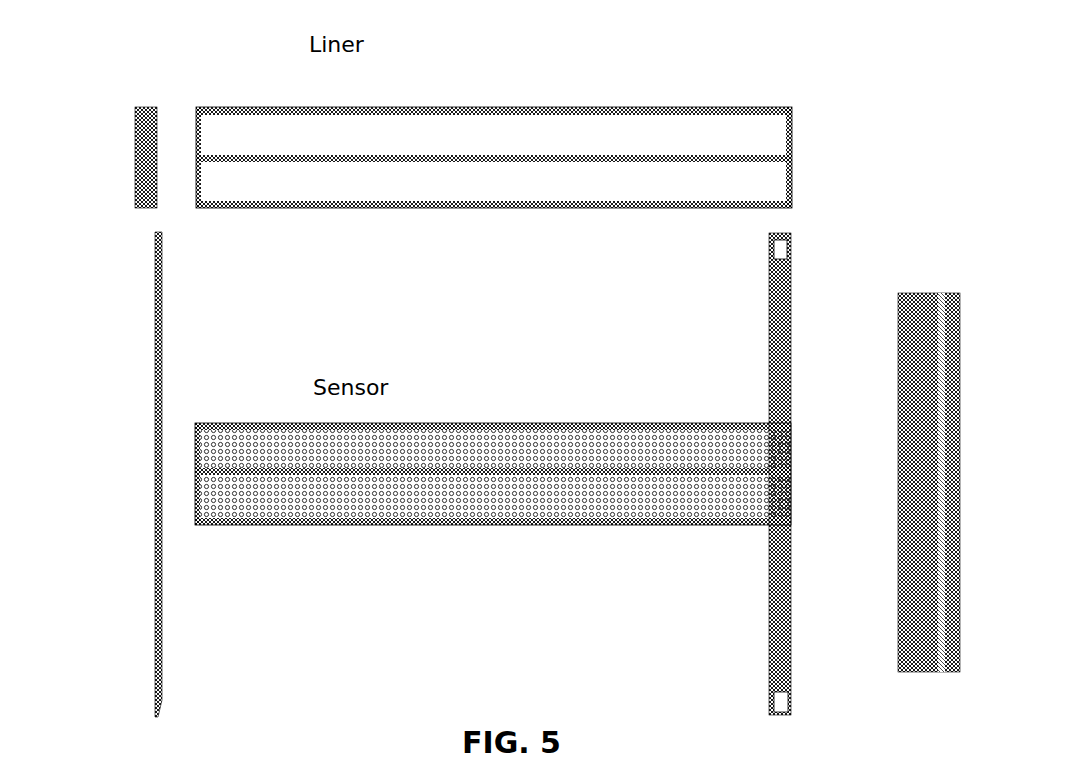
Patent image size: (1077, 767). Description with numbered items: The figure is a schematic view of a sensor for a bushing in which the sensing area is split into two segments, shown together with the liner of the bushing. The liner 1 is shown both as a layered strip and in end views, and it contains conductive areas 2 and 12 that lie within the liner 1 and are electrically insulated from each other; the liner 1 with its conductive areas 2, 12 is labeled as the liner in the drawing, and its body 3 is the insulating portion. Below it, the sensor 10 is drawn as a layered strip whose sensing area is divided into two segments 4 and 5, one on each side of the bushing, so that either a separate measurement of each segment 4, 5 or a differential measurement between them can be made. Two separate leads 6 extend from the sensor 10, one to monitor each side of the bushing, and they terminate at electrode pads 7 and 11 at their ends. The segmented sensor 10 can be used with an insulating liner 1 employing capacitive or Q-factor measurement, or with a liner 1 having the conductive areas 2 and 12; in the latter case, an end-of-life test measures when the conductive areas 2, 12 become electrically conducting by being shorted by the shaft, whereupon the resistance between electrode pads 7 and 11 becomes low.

The liner 1 is at (140, 145).
The conductive area 2 is at (690, 113).
The liner body 3 is at (470, 107).
The first sensor layer 4 is at (154, 412).
The second sensor layer 5 is at (163, 470).
The leads 6 is at (768, 336).
The electrode pad 7 is at (772, 252).
The sensor 10 is at (548, 427).
The electrode pad 11 is at (775, 700).
The conductive area 12 is at (141, 115).